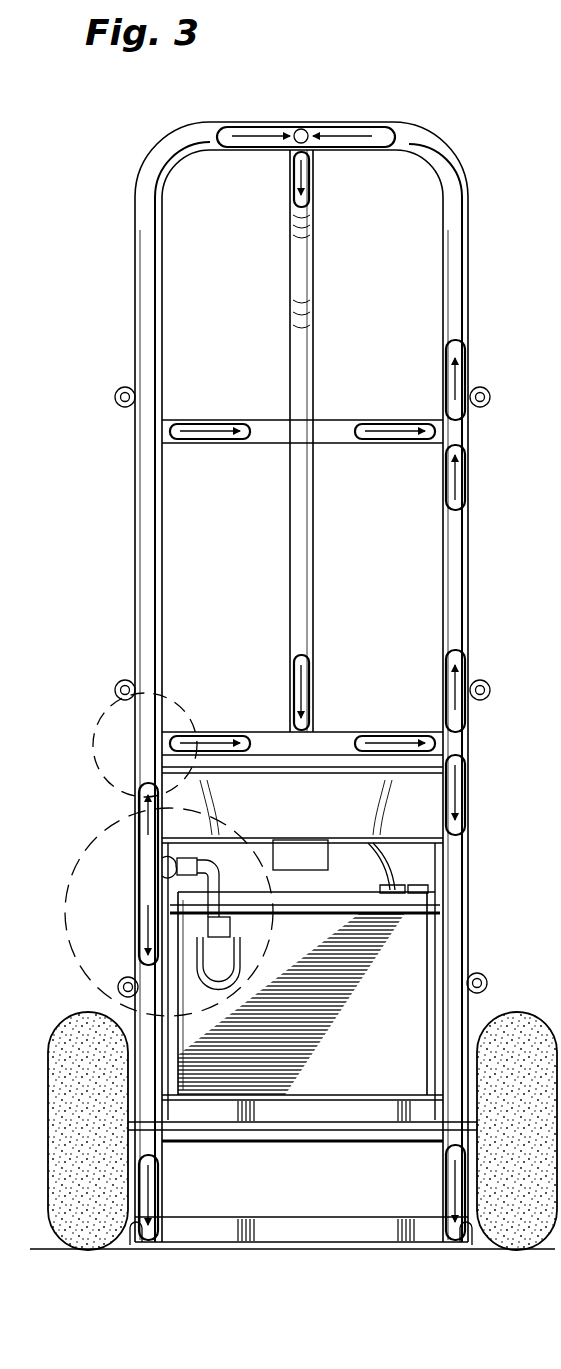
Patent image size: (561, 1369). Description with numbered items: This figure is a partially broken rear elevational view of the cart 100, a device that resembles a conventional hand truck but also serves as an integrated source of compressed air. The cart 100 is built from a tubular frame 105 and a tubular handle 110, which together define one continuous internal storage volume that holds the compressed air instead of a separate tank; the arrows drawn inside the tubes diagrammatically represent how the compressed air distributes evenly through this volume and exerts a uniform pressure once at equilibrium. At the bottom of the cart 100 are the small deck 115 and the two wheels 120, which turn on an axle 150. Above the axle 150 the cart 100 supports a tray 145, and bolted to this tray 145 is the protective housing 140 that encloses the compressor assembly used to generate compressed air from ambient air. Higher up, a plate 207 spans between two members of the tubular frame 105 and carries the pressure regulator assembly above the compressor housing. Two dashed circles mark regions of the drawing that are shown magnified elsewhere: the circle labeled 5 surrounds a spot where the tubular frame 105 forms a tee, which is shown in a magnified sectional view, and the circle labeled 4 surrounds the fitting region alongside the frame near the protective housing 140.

The cart 100 is at (115, 312).
The tubular frame 105 is at (133, 546).
The tubular handle 110 is at (283, 213).
The small deck 115 is at (325, 1232).
The wheels 120 is at (85, 1018).
The protective housing 140 is at (405, 965).
The tray 145 is at (325, 1106).
The axle 150 is at (247, 1137).
The plate 207 is at (442, 838).
The detail area of FIG. 4 (valve assembly) 4 is at (82, 840).
The detail area of FIG. 5 is at (103, 704).